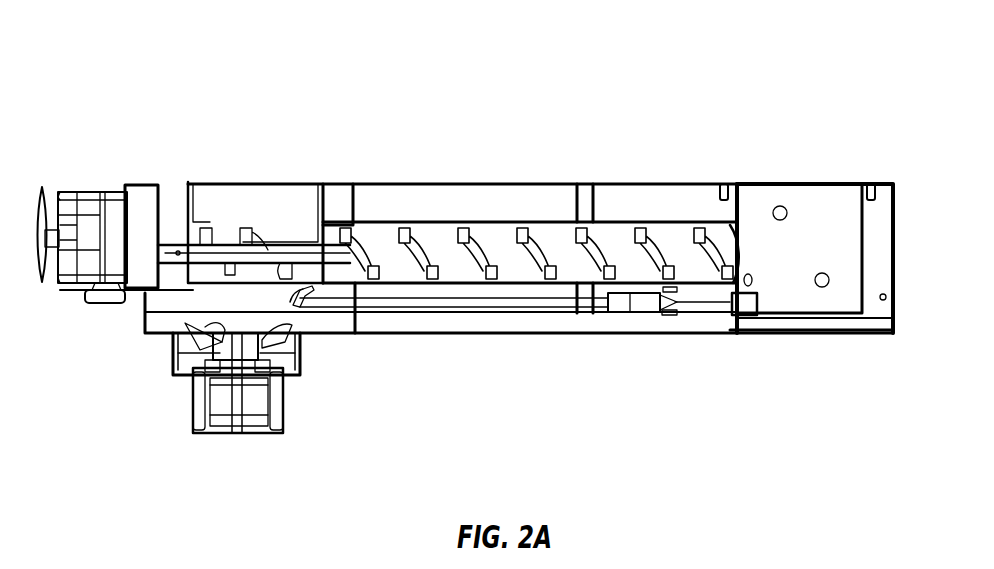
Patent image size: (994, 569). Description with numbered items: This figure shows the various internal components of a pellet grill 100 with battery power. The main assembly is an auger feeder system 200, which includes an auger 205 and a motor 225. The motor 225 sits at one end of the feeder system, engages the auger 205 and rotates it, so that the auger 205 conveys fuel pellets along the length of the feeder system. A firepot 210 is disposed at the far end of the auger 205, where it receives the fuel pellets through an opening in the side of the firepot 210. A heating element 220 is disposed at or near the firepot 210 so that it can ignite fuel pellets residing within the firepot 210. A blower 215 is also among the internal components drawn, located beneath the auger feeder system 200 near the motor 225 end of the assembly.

The pellet grill 100 is at (737, 94).
The auger feeder system 200 is at (157, 121).
The auger 205 is at (482, 226).
The firepot 210 is at (825, 223).
The blower 215 is at (168, 355).
The heating element 220 is at (703, 302).
The motor 225 is at (87, 190).